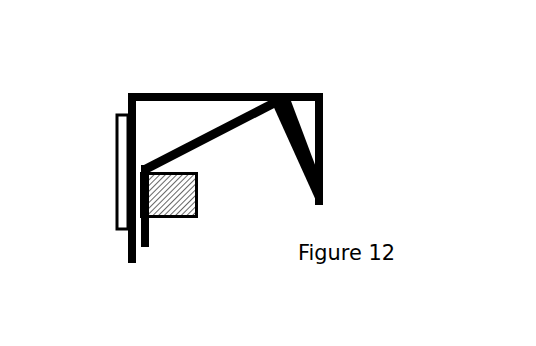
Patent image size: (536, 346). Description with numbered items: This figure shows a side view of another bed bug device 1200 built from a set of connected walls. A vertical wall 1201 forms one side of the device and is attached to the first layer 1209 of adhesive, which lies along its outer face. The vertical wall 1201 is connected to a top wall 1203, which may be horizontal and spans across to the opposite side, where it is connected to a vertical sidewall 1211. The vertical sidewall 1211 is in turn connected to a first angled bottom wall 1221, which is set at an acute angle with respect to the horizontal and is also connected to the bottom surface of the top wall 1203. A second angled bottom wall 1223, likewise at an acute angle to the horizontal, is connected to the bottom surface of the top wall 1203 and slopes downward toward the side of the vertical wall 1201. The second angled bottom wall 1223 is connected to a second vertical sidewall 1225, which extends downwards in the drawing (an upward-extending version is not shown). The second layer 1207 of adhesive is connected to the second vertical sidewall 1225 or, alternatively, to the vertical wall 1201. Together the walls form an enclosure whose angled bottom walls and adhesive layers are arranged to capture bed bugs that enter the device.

The bed bug device 1200 is at (219, 137).
The vertical wall 1201 is at (128, 248).
The top wall 1203 is at (293, 93).
The second layer of adhesive 1207 is at (170, 218).
The first layer of adhesive 1209 is at (110, 172).
The vertical sidewall 1211 is at (323, 148).
The first angled bottom wall 1221 is at (292, 138).
The second angled bottom wall 1223 is at (213, 142).
The second vertical sidewall 1225 is at (145, 247).